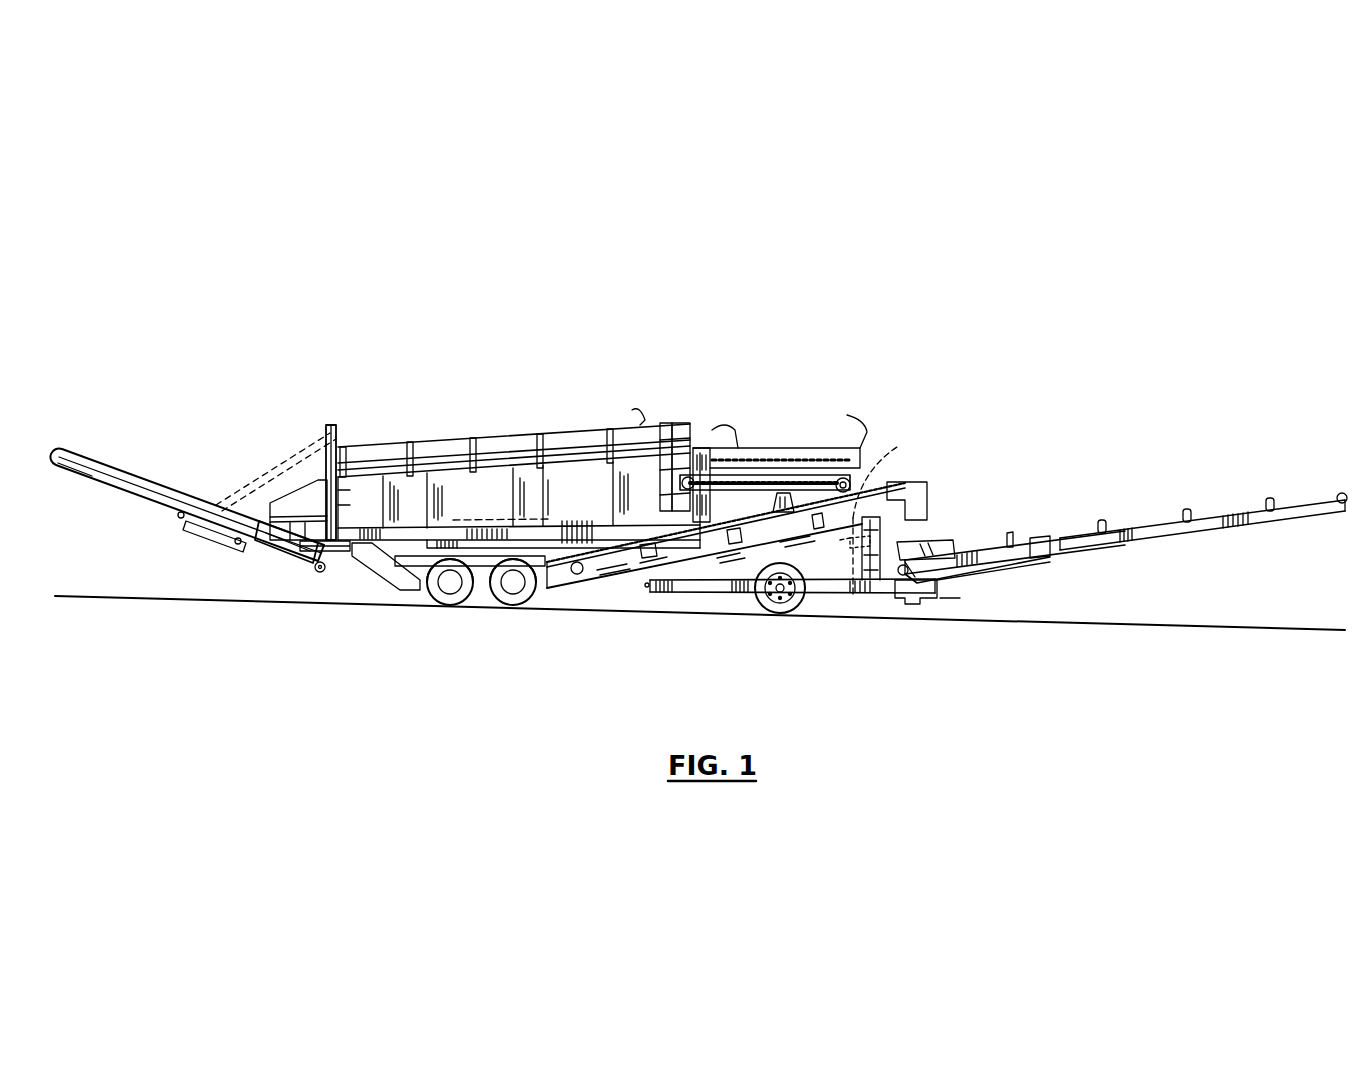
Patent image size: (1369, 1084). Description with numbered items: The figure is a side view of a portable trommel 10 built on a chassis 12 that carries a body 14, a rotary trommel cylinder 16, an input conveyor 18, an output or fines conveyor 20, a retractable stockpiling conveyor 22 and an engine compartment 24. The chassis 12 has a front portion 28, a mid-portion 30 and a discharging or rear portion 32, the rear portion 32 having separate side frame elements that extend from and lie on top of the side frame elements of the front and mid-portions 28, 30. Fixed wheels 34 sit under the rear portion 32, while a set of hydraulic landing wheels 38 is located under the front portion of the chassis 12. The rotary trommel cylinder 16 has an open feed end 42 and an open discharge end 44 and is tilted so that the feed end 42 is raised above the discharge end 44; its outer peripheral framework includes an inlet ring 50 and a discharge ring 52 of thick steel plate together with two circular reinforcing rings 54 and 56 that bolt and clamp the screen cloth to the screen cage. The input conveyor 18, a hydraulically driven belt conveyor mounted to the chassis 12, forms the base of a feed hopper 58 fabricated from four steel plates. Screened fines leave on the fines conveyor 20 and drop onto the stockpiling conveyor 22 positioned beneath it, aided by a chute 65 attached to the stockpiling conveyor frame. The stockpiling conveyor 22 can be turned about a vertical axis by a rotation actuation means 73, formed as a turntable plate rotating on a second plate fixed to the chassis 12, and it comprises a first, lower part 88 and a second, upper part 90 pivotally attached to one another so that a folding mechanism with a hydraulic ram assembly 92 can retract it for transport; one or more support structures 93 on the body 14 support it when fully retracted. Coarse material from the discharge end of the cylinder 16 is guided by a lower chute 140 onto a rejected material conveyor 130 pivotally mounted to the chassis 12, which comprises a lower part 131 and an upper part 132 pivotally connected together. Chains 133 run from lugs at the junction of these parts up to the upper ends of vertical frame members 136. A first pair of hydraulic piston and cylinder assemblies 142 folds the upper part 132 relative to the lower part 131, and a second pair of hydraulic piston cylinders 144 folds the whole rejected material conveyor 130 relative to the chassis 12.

The portable trommel 10 is at (742, 345).
The chassis 12 is at (647, 590).
The body 14 is at (714, 452).
The rotary trommel cylinder 16 is at (578, 440).
The input conveyor 18 is at (708, 462).
The output or fines conveyor 20 is at (835, 565).
The retractable stockpiling conveyor 22 is at (1142, 446).
The engine compartment 24 is at (886, 458).
The front portion 28 is at (978, 600).
The mid-portion 30 is at (736, 595).
The discharging or rear portion 32 is at (398, 592).
The fixed wheels 34 is at (513, 606).
The hydraulic landing wheels 38 is at (782, 614).
The open feed end 42 is at (702, 423).
The open discharge end 44 is at (283, 447).
The inlet ring 50 is at (664, 425).
The discharge ring 52 is at (346, 455).
The circular reinforcing ring 54 is at (410, 442).
The circular reinforcing ring 56 is at (520, 440).
The feed hopper 58 is at (782, 450).
The chute 65 is at (943, 540).
The rotation actuation means 73 is at (905, 602).
The first, lower part 88 is at (1000, 535).
The second, upper part 90 is at (1160, 536).
The hydraulic ram assembly 92 is at (1028, 578).
The support structure 93 is at (860, 437).
The rejected material conveyor 130 is at (125, 455).
The lower part 131 is at (268, 560).
The upper part 132 is at (92, 480).
The chains 133 is at (228, 474).
The vertical frame members 136 is at (325, 437).
The lower chute 140 is at (292, 570).
The first pair of hydraulic piston and cylinder assemblies 142 is at (205, 534).
The second pair of hydraulic piston cylinders 144 is at (345, 560).